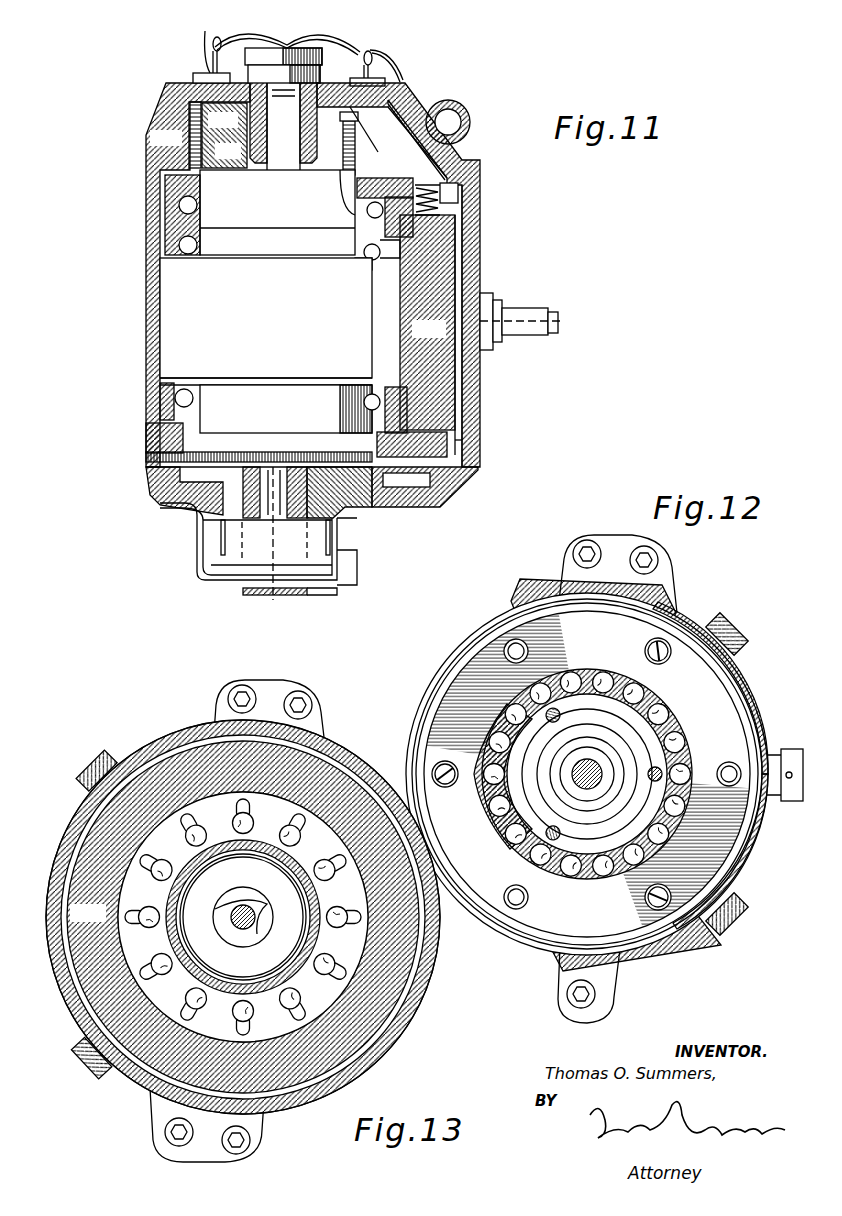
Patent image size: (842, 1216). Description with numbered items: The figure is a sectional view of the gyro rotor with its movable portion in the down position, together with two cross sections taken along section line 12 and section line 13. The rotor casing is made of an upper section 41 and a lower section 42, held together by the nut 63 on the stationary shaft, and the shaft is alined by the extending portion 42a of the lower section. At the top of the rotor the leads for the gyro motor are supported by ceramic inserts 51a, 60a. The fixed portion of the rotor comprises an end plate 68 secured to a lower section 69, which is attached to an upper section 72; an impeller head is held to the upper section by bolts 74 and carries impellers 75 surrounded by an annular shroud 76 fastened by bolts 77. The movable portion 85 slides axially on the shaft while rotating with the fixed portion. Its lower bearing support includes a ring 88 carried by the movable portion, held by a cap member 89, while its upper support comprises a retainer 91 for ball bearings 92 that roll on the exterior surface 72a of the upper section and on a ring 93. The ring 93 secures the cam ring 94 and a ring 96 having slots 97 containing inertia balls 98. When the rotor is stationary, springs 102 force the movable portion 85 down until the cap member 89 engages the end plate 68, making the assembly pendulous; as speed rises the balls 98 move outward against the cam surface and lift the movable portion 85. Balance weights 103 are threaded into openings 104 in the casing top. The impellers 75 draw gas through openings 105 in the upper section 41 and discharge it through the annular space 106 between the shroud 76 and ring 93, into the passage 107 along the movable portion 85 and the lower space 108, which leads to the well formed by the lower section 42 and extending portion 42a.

In FIG. 11, the section line 12— 12 is at (66, 217).
In FIG. 11, the section line 13— 13 is at (135, 245).
In FIG. 11, the upper section of rotor casing 41 is at (470, 178).
In FIG. 11, the lower section of rotor casing 42 is at (440, 490).
In FIG. 11, the extending portion of lower section 42a is at (303, 504).
In FIG. 11, the ceramic insert 51a is at (203, 75).
In FIG. 11, the ceramic insert 60a is at (398, 68).
In FIG. 11, the nut 63 is at (283, 48).
In FIG. 11, the end plate 68 is at (240, 458).
In FIG. 11, the lower section of rotor 69 is at (286, 409).
In FIG. 11, the upper section of rotor 72 is at (266, 321).
In FIG. 11, the exterior surface of upper section 72a is at (277, 212).
In FIG. 11, the bolts 74 is at (344, 118).
In FIG. 11, the impellers 75 is at (198, 275).
In FIG. 11, the annular shroud 76 is at (410, 130).
In FIG. 11, the bolts 77 is at (196, 140).
In FIG. 11, the movable portion of rotor 85 is at (430, 335).
In FIG. 13, the movable portion of rotor 85 is at (243, 917).
In FIG. 11, the ring 88 is at (402, 413).
In FIG. 11, the cap member 89 is at (440, 452).
In FIG. 11, the retainer 91 is at (196, 224).
In FIG. 12, the retainer 91 is at (672, 720).
In FIG. 12, the ball bearings 92 is at (676, 822).
In FIG. 11, the ring 93 is at (405, 225).
In FIG. 11, the cam ring 94 is at (392, 258).
In FIG. 13, the ring 96 is at (358, 890).
In FIG. 13, the slots 97 is at (350, 914).
In FIG. 11, the inertia balls 98 is at (365, 258).
In FIG. 13, the inertia balls 98 is at (306, 930).
In FIG. 11, the spring 102 is at (440, 180).
In FIG. 12, the spring 102 is at (524, 648).
In FIG. 11, the balance weights 103 is at (462, 116).
In FIG. 11, the openings 104 is at (460, 105).
In FIG. 11, the openings 105 is at (226, 86).
In FIG. 11, the annular space 106 is at (455, 200).
In FIG. 11, the passage 107 is at (458, 408).
In FIG. 11, the lower space 108 is at (425, 488).